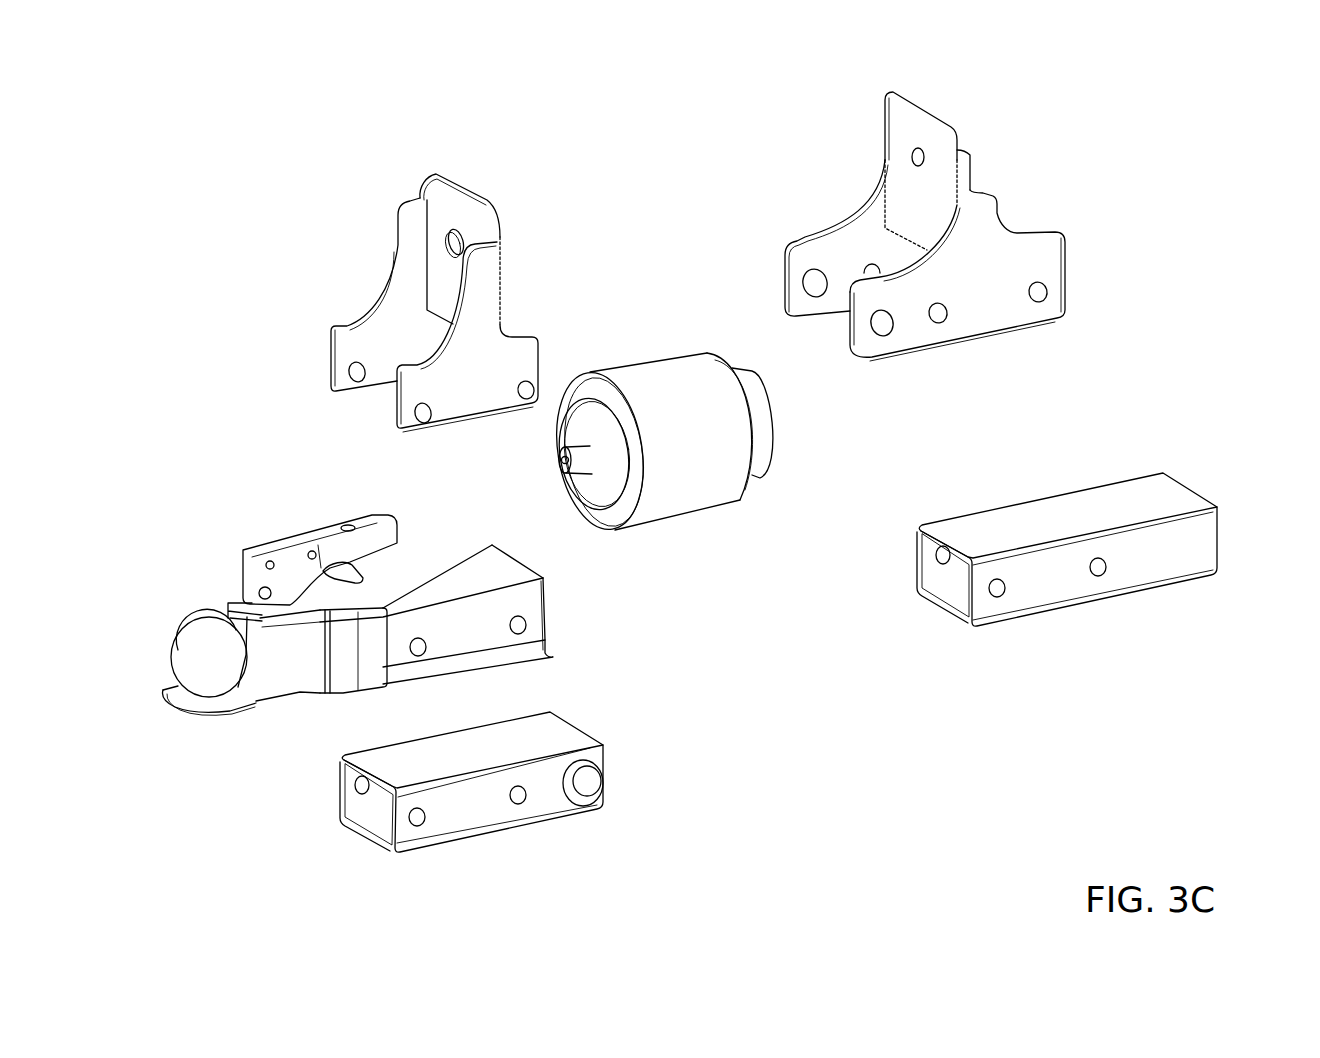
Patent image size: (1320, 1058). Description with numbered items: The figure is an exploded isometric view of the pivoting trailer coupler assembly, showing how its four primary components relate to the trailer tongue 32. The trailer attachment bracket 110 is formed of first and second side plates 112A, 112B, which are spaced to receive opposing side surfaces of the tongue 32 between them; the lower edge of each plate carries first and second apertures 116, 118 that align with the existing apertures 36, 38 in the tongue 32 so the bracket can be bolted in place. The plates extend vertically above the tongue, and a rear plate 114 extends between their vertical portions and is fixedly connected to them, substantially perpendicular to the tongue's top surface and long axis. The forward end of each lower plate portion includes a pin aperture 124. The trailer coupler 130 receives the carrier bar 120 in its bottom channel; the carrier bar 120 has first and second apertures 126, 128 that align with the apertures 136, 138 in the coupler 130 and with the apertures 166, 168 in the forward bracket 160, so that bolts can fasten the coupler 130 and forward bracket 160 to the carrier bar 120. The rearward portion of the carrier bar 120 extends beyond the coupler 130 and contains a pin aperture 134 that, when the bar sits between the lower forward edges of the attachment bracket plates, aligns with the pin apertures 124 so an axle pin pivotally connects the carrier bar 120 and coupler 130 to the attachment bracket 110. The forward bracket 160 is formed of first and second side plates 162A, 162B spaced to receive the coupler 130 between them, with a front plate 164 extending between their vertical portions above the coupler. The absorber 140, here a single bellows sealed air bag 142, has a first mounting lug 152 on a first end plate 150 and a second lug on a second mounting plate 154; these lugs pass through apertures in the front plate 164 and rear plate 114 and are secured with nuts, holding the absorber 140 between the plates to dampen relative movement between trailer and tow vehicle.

The tongue 32 is at (1096, 556).
The aperture 36 is at (1102, 570).
The aperture 38 is at (1000, 592).
The trailer attachment bracket 110 is at (954, 231).
The first side plate 112A is at (850, 248).
The second side plate 112B is at (997, 301).
The rear plate 114 is at (932, 135).
The first aperture 116 is at (1048, 292).
The second aperture 118 is at (942, 317).
The carrier bar 120 is at (481, 832).
The pin aperture 124 is at (885, 330).
The first aperture 126 is at (522, 800).
The second aperture 128 is at (420, 823).
The trailer coupler 130 is at (373, 672).
The pin aperture 134 is at (597, 782).
The aperture 136 is at (522, 630).
The aperture 138 is at (423, 653).
The absorber 140 is at (660, 402).
The air bag 142 is at (649, 444).
The first end plate 150 is at (568, 435).
The first mounting lug 152 is at (565, 467).
The second mounting plate 154 is at (767, 430).
The forward bracket 160 is at (403, 295).
The first side plate 162A is at (377, 327).
The second side plate 162B is at (491, 366).
The front plate 164 is at (440, 203).
The first aperture 166 is at (527, 390).
The second aperture 168 is at (424, 416).